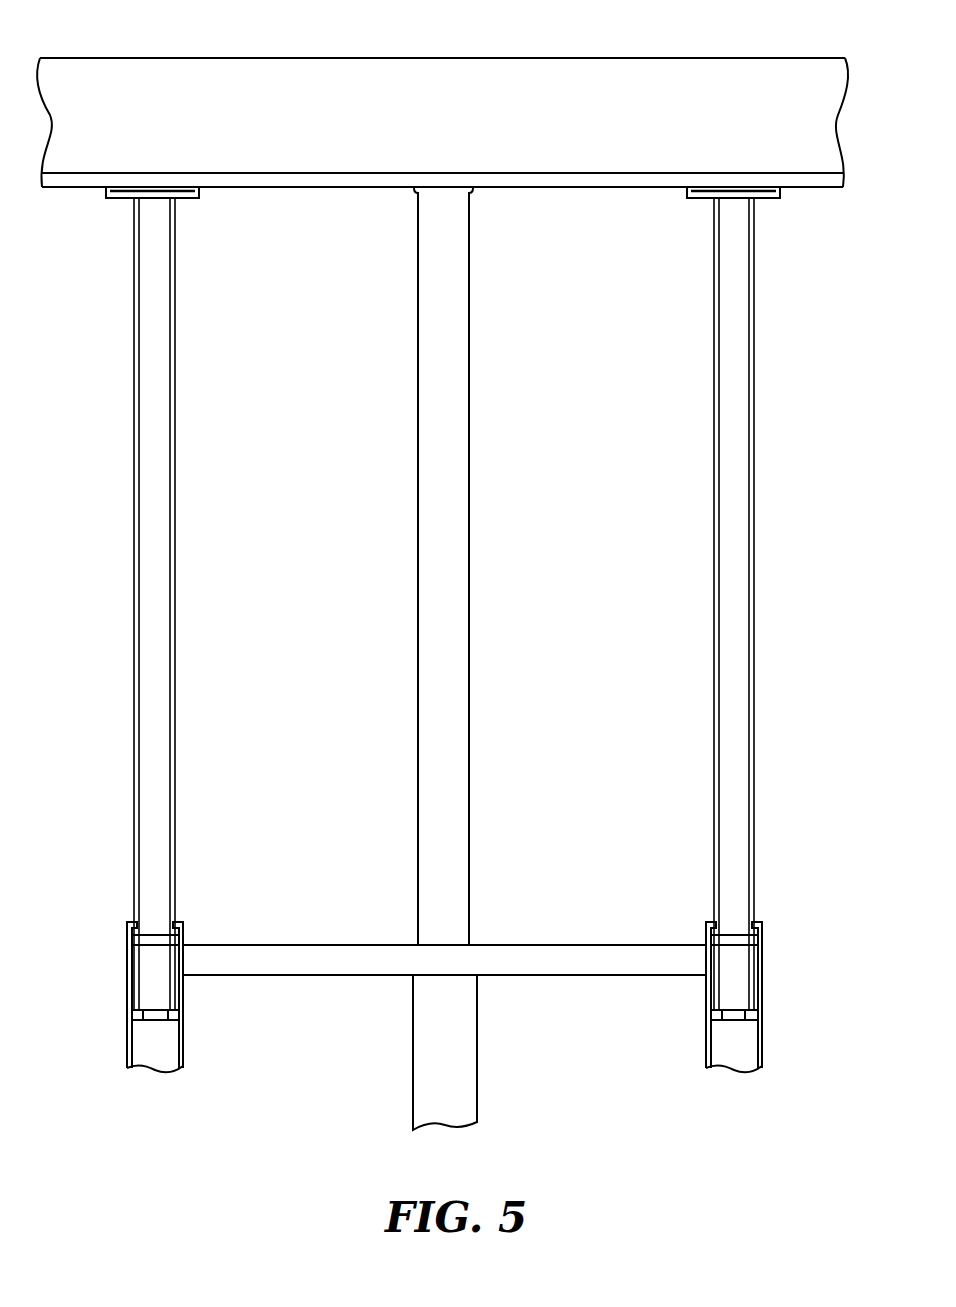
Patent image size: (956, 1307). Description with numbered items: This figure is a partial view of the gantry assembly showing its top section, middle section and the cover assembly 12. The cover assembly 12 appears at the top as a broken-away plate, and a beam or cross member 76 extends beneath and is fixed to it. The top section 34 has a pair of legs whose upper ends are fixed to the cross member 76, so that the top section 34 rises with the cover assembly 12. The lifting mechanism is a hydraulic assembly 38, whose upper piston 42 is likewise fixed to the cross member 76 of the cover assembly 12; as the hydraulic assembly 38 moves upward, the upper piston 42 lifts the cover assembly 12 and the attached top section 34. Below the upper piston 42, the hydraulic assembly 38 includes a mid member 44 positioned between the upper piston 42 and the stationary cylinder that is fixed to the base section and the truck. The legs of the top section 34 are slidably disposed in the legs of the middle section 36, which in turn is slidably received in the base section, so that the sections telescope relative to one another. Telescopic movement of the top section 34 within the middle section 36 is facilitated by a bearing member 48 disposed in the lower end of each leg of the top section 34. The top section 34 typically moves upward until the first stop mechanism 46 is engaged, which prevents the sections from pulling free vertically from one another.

The cover assembly 12 is at (740, 58).
The cross member 76 is at (807, 188).
The upper piston 42 is at (470, 551).
The top section 34 is at (756, 549).
The hydraulic assembly 38 is at (490, 746).
The mid member 44 is at (477, 1045).
The middle section 36 is at (760, 1055).
The first stop mechanism 46 is at (115, 971).
The bearing member 48 is at (153, 1022).